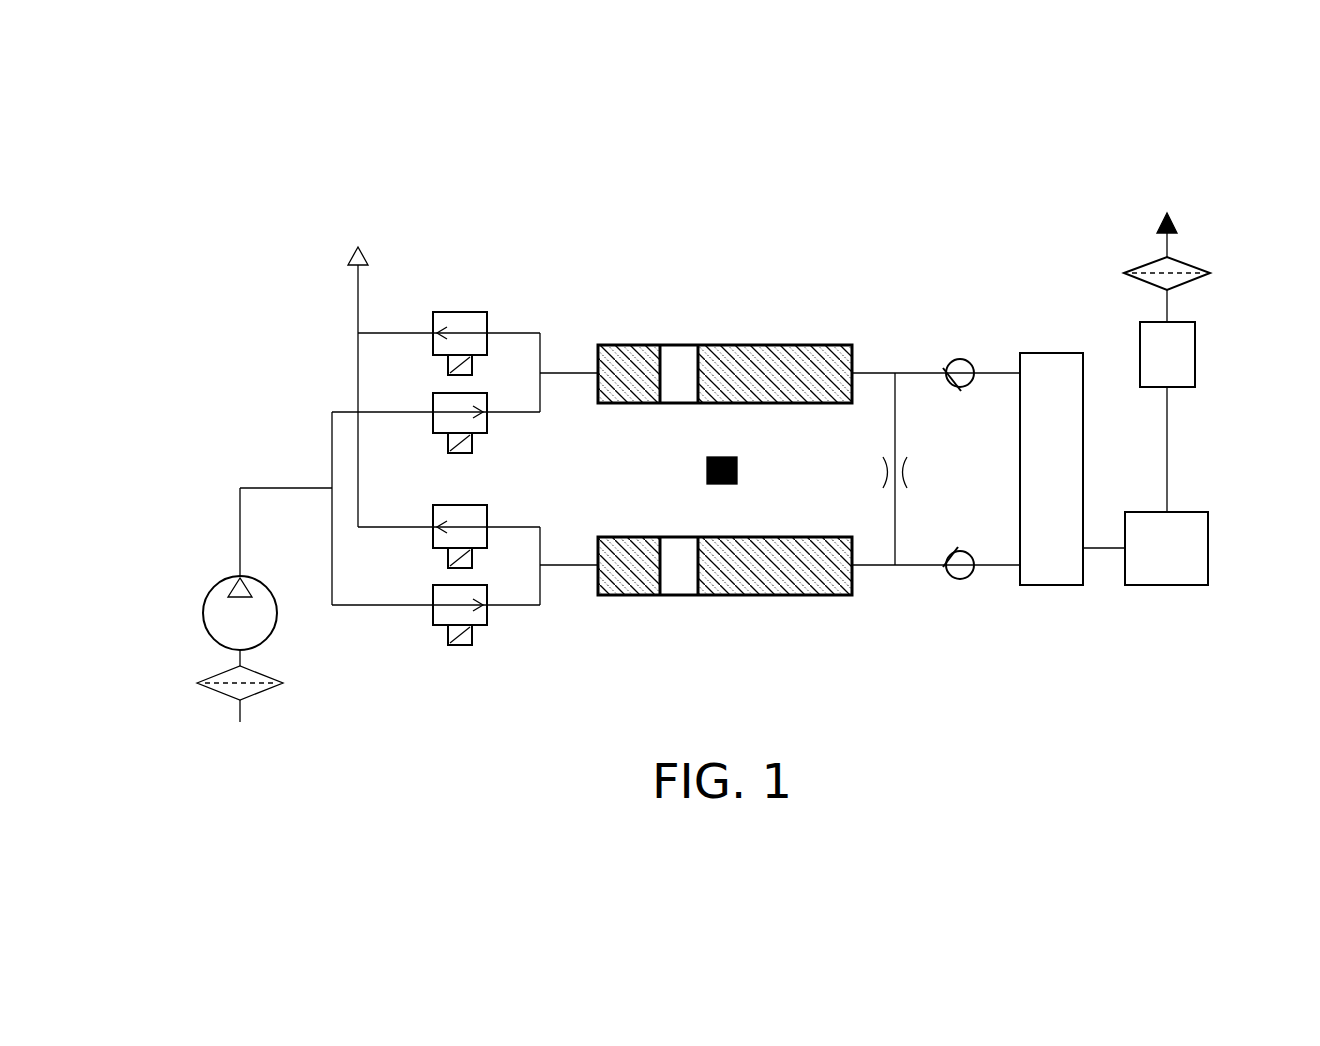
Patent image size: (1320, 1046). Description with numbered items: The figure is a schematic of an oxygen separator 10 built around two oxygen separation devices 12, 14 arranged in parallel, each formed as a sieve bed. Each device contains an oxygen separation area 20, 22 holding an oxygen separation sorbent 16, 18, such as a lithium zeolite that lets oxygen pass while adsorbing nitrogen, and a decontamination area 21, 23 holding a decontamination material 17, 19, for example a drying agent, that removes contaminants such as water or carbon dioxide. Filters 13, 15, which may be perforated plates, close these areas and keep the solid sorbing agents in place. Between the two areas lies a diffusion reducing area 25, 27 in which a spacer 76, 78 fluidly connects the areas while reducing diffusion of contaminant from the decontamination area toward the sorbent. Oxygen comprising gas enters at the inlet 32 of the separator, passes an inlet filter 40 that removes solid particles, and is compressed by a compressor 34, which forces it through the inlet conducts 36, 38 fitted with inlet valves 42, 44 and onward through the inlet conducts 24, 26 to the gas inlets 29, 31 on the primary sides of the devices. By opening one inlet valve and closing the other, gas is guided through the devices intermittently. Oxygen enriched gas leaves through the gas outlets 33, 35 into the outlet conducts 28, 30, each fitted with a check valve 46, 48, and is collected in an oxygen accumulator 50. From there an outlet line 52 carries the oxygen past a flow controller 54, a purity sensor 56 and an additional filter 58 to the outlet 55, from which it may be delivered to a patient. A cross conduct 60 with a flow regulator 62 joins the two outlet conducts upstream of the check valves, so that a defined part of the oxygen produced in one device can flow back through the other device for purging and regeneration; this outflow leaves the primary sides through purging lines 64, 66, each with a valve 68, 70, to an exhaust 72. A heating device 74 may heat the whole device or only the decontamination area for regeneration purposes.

The oxygen separator 10 is at (251, 183).
The oxygen separation device 12 is at (709, 373).
The filter 13 is at (598, 345).
The oxygen separation device 14 is at (710, 573).
The filter 15 is at (598, 595).
The oxygen separation sorbent 16 is at (780, 355).
The decontamination material 17 is at (625, 355).
The oxygen separation sorbent 18 is at (782, 580).
The decontamination material 19 is at (627, 580).
The oxygen separation area 20 is at (818, 409).
The decontamination area 21 is at (629, 409).
The oxygen separation area 22 is at (822, 531).
The decontamination area 23 is at (628, 531).
The inlet conduct 24 is at (558, 373).
The diffusion reducing area 25 is at (674, 410).
The inlet conduct 26 is at (558, 565).
The diffusion reducing area 27 is at (676, 530).
The outlet conduct 28 is at (928, 373).
The gas inlet 29 is at (598, 373).
The outlet conduct 30 is at (928, 565).
The gas inlet 31 is at (598, 565).
The inlet 32 is at (240, 716).
The gas outlet 33 is at (852, 373).
The compressor 34 is at (203, 613).
The gas outlet 35 is at (852, 565).
The inlet conduct 36 is at (370, 412).
The inlet conduct 38 is at (370, 605).
The inlet filter 40 is at (215, 672).
The inlet valve 42 is at (490, 425).
The inlet valve 44 is at (432, 618).
The valve 46 is at (955, 358).
The valve 48 is at (958, 580).
The oxygen accumulator 50 is at (1052, 353).
The outlet line 52 is at (1167, 448).
The flow controller 54 is at (1208, 548).
The outlet 55 is at (1175, 222).
The purity sensor 56 is at (1195, 355).
The filter 58 is at (1180, 268).
The cross conduct 60 is at (895, 415).
The flow regulator 62 is at (906, 485).
The purging line 64 is at (370, 333).
The purging line 66 is at (370, 527).
The valve 68 is at (462, 312).
The valve 70 is at (490, 510).
The exhaust 72 is at (350, 257).
The heating device 74 is at (737, 470).
The spacer 76 is at (690, 395).
The spacer 78 is at (692, 545).